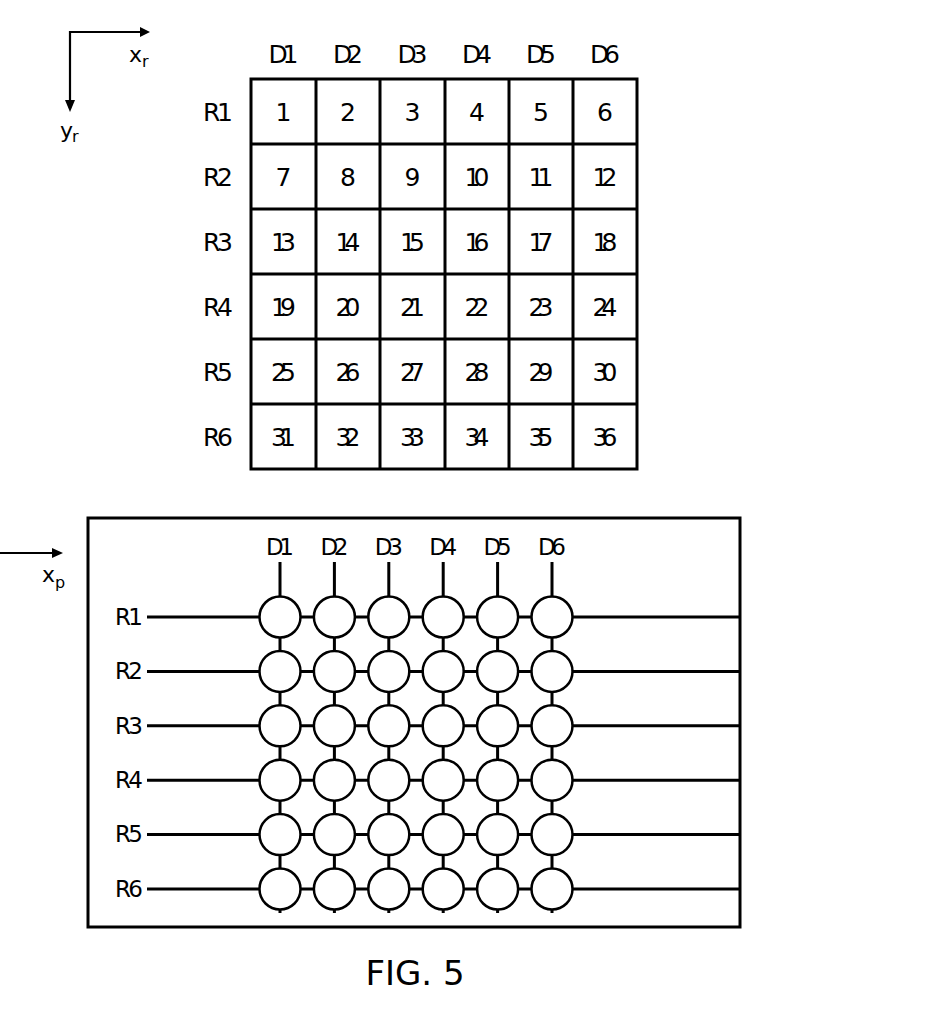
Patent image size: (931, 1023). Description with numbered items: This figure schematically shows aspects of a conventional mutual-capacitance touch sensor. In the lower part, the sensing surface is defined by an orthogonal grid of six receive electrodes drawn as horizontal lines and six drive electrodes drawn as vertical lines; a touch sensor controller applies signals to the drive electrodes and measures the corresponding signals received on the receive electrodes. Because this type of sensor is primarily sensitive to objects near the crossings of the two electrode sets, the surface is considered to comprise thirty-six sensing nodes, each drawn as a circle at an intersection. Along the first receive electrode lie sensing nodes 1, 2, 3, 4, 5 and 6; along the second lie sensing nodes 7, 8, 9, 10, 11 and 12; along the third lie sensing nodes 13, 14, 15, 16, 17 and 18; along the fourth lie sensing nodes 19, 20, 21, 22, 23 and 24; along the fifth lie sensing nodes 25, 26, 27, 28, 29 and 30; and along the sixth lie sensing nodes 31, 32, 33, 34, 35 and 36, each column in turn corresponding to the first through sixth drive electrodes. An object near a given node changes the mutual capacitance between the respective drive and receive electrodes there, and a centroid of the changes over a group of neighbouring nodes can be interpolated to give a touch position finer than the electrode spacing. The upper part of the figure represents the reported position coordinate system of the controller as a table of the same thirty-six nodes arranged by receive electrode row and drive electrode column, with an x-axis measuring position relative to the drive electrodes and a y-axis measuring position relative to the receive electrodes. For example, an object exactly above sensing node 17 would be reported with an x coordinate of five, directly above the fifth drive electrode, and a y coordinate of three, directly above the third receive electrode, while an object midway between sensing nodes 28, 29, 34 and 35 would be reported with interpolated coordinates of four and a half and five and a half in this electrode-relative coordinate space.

The sensing node 1 is at (280, 617).
The sensing node 2 is at (334, 617).
The sensing node 3 is at (388, 617).
The sensing node 4 is at (443, 617).
The sensing node 5 is at (497, 617).
The sensing node 6 is at (552, 617).
The sensing node 7 is at (280, 671).
The sensing node 8 is at (334, 671).
The sensing node 9 is at (388, 671).
The sensing node 10 is at (443, 671).
The sensing node 11 is at (497, 671).
The sensing node 12 is at (552, 671).
The sensing node 13 is at (280, 725).
The sensing node 14 is at (334, 725).
The sensing node 15 is at (388, 725).
The sensing node 16 is at (443, 725).
The sensing node 17 is at (497, 725).
The sensing node 18 is at (552, 725).
The sensing node 19 is at (280, 780).
The sensing node 20 is at (334, 780).
The sensing node 21 is at (388, 780).
The sensing node 22 is at (443, 780).
The sensing node 23 is at (497, 780).
The sensing node 24 is at (552, 780).
The sensing node 25 is at (280, 834).
The sensing node 26 is at (334, 834).
The sensing node 27 is at (388, 834).
The sensing node 28 is at (443, 834).
The sensing node 29 is at (497, 834).
The sensing node 30 is at (552, 834).
The sensing node 31 is at (280, 889).
The sensing node 32 is at (334, 889).
The sensing node 33 is at (388, 889).
The sensing node 34 is at (443, 889).
The sensing node 35 is at (497, 889).
The sensing node 36 is at (552, 889).